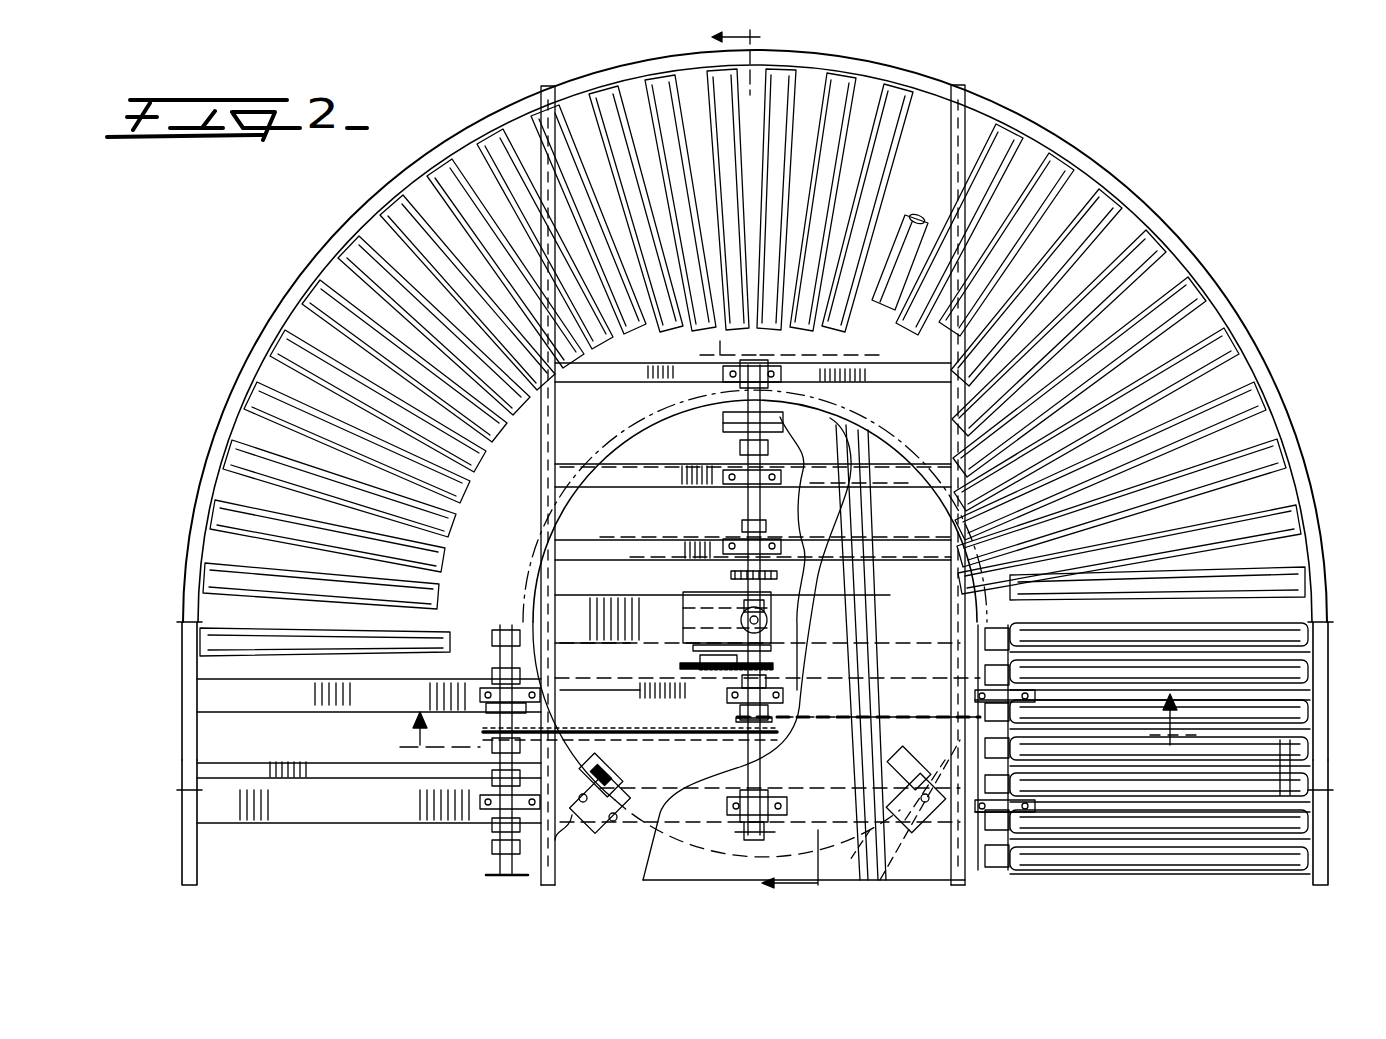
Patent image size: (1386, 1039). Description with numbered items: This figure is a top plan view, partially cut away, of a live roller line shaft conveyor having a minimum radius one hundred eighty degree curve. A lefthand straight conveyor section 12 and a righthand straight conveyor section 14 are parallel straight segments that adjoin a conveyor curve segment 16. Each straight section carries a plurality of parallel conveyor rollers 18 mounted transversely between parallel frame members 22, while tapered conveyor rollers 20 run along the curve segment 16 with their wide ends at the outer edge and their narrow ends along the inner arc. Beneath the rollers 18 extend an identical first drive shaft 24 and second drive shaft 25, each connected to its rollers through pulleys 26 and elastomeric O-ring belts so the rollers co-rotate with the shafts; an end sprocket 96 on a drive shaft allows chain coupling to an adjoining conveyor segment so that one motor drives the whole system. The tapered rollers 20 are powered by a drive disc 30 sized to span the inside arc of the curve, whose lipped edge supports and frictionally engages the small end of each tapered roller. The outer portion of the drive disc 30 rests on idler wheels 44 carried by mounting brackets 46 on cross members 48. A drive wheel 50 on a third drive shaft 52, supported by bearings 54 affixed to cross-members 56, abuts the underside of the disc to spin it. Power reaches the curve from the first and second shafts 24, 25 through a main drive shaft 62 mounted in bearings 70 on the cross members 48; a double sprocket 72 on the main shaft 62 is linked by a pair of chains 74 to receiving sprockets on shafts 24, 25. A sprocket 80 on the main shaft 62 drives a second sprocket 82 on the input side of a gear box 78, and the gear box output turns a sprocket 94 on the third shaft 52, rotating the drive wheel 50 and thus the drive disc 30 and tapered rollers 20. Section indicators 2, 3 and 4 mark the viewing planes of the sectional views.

The section line 2 is at (800, 859).
The section line 3 is at (744, 58).
The section line 4 is at (793, 728).
The lefthand straight conveyor section 12 is at (1330, 636).
The righthand straight conveyor section 14 is at (172, 664).
The conveyor curve segment 16 is at (838, 62).
The conveyor rollers 18 is at (1278, 860).
The tapered conveyor rollers 20 is at (1022, 130).
The frame members 22 is at (185, 823).
The first drive shaft 24 is at (1010, 850).
The second drive shaft 25 is at (498, 845).
The pulleys 26 is at (497, 830).
The drive disc 30 is at (805, 510).
The idler wheels 44 is at (657, 810).
The mounting brackets 46 is at (592, 822).
The cross members 48 is at (568, 862).
The drive wheel 50 is at (724, 422).
The third drive shaft 52 is at (746, 447).
The bearings 54 is at (733, 368).
The cross-members 56 is at (612, 375).
The main drive shaft 62 is at (740, 744).
The bearings 70 is at (772, 692).
The double sprocket 72 is at (740, 715).
The chains 74 is at (592, 730).
The gear box 78 is at (684, 613).
The sprocket 80 is at (772, 690).
The second sprocket 82 is at (700, 658).
The sprocket 94 is at (735, 573).
The end sprocket 96 is at (490, 878).